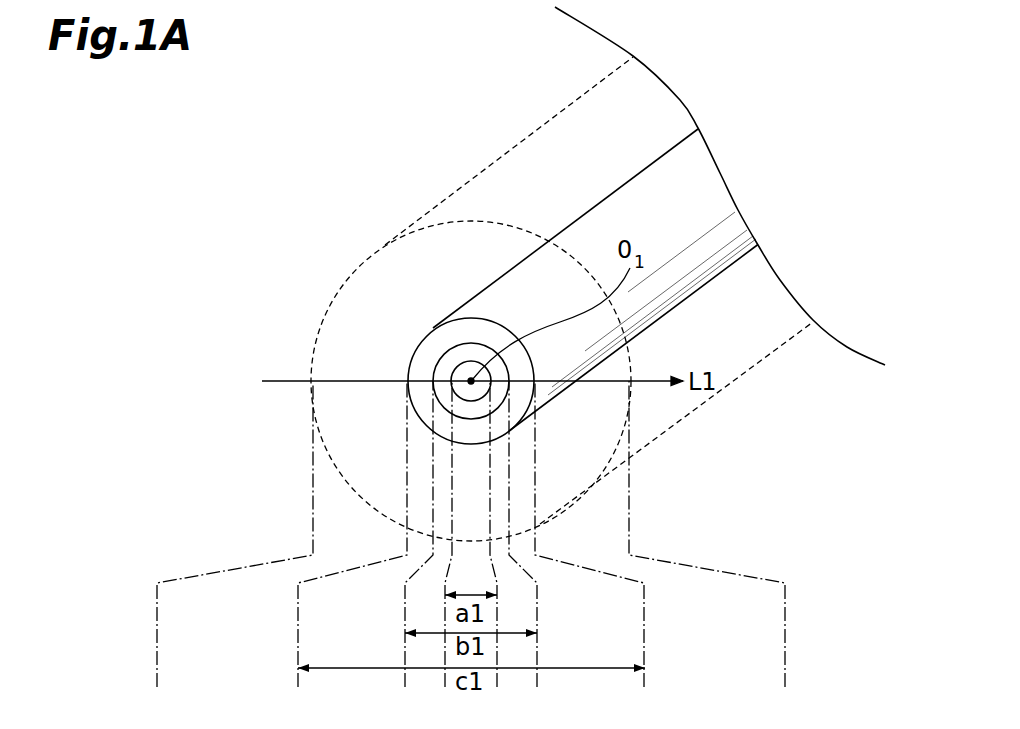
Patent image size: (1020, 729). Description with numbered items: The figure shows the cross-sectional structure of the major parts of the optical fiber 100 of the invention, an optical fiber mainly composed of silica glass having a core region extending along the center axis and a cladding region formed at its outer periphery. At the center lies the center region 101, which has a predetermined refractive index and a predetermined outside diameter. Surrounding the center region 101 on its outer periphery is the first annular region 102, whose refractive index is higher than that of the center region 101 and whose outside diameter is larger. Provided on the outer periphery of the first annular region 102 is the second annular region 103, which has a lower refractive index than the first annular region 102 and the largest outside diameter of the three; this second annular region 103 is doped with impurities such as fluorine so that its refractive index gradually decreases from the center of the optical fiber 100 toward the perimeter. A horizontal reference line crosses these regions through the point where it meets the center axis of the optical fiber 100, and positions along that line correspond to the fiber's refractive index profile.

The optical fiber 100 is at (490, 222).
The center region 101 is at (465, 373).
The first annular region 102 is at (462, 355).
The second annular region 103 is at (470, 330).